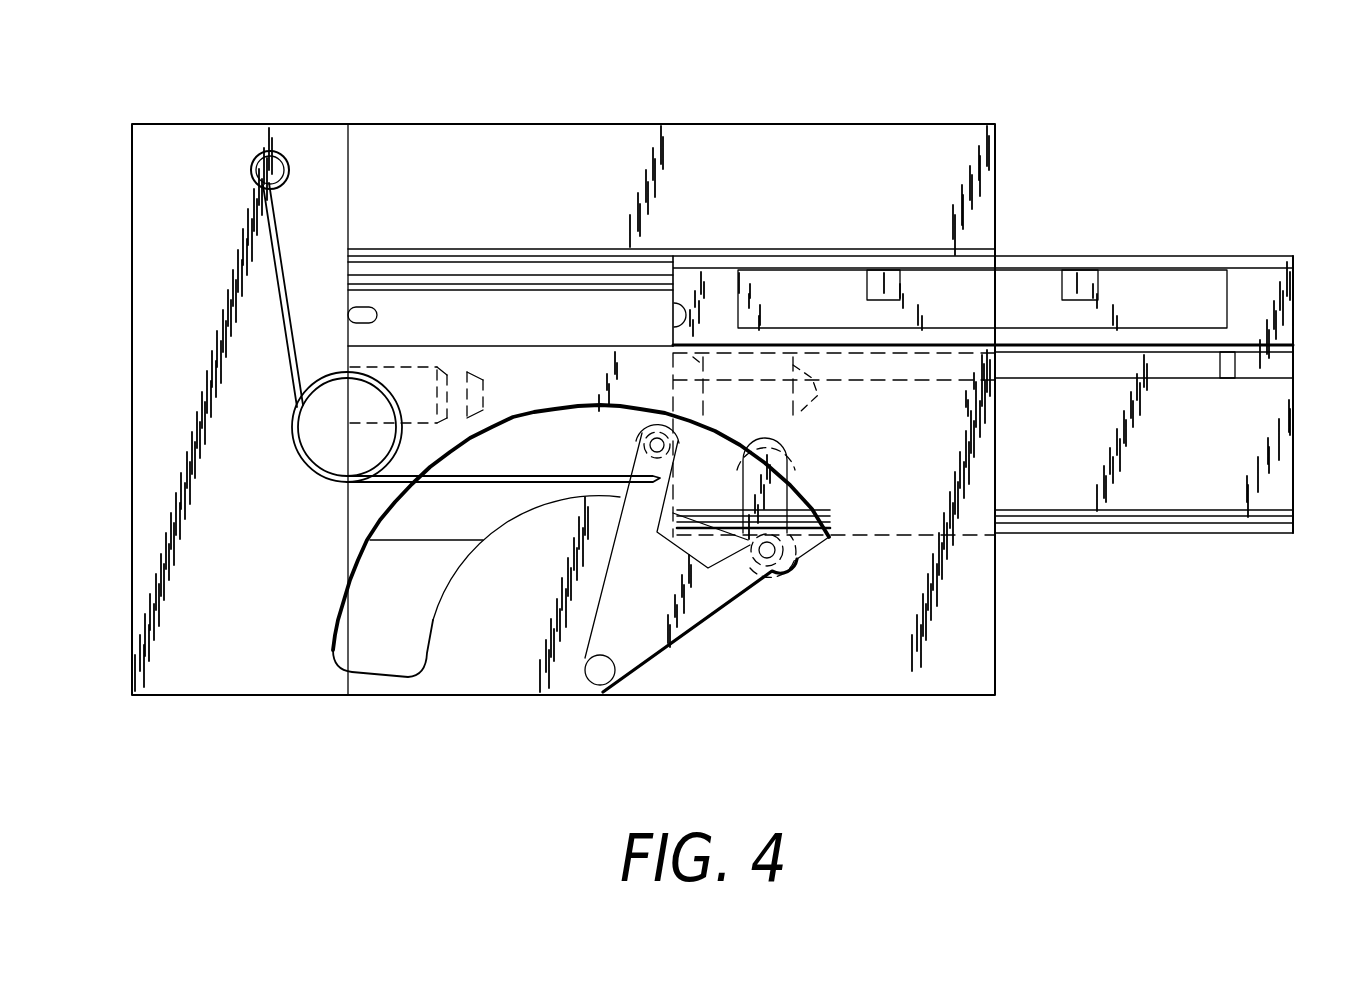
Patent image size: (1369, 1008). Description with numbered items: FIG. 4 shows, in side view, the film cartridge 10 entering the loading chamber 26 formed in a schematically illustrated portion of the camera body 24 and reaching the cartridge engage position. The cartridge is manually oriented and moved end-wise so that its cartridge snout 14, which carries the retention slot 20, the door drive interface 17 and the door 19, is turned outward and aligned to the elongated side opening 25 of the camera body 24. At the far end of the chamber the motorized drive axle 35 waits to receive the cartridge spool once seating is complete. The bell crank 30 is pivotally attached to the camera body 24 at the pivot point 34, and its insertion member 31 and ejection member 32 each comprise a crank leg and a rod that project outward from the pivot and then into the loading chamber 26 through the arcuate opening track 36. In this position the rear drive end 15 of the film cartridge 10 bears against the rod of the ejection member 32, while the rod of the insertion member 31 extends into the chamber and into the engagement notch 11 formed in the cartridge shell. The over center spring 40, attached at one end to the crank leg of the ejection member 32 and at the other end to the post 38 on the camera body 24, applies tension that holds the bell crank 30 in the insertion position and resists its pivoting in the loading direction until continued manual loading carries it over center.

The film cartridge 10 is at (1143, 535).
The engagement notch 11 is at (755, 468).
The cartridge snout 14 is at (1250, 290).
The rear drive end 15 is at (673, 283).
The door drive interface 17 is at (670, 315).
The door 19 is at (1143, 288).
The retention slot 20 is at (1205, 357).
The camera body 24 is at (238, 697).
The elongated side opening 25 is at (995, 256).
The loading chamber 26 is at (537, 341).
The bell crank 30 is at (700, 615).
The insertion member 31 is at (788, 565).
The ejection member 32 is at (640, 440).
The pivot point 34 is at (603, 690).
The motorized drive axle 35 is at (485, 385).
The arcuate opening track 36 is at (430, 612).
The post 38 is at (275, 150).
The over center spring 40 is at (296, 455).